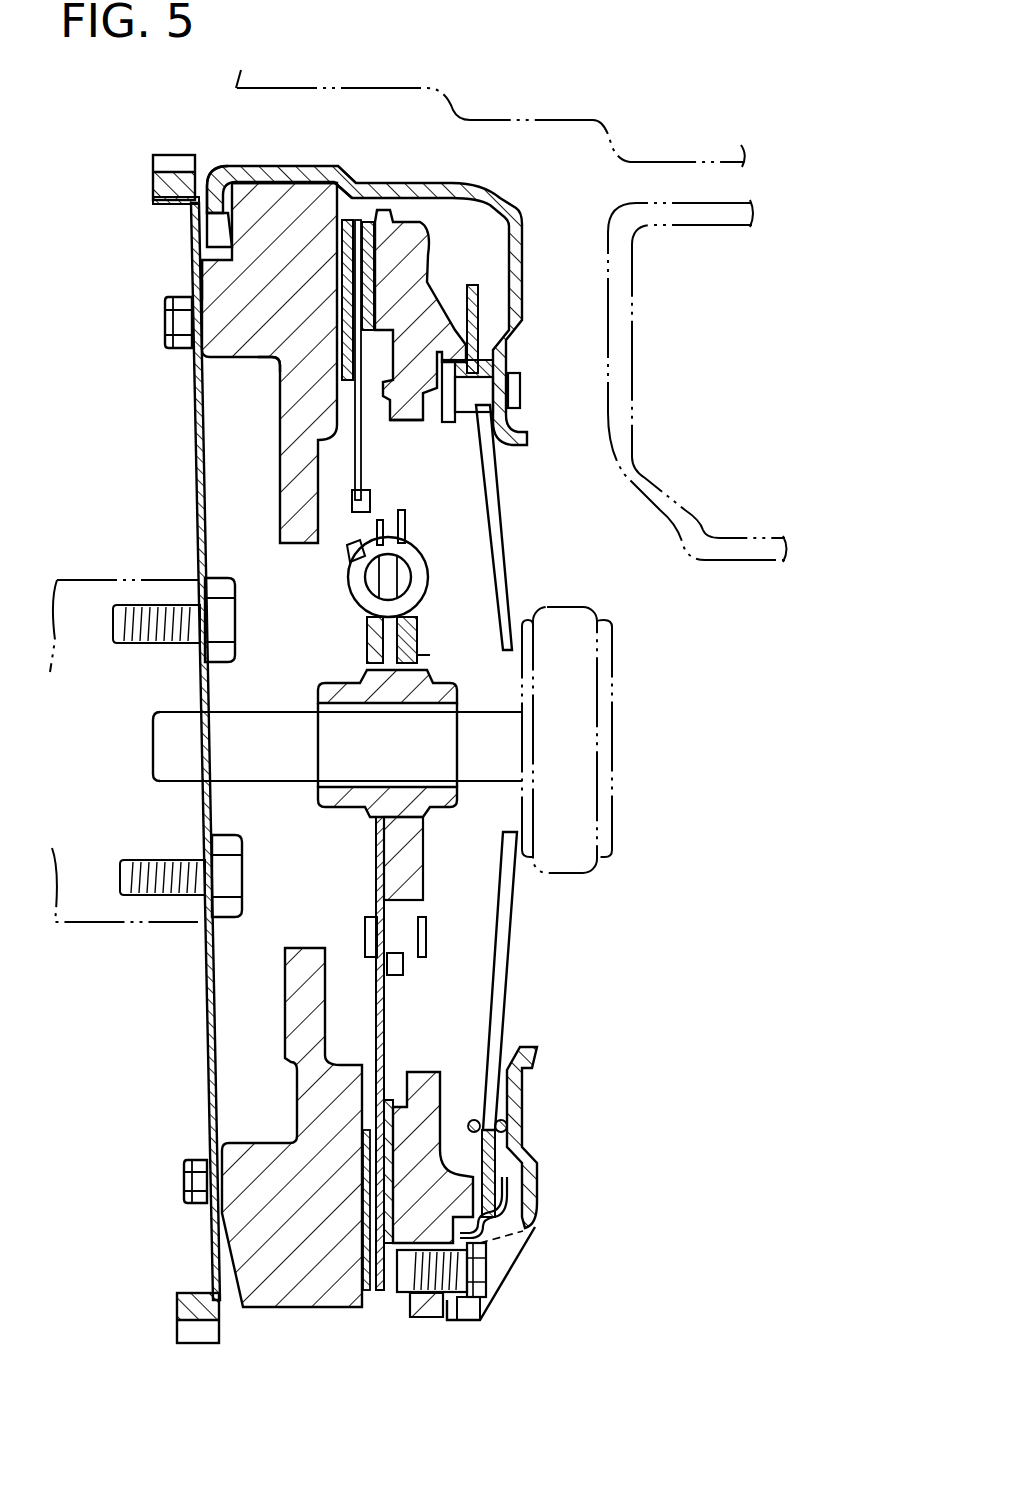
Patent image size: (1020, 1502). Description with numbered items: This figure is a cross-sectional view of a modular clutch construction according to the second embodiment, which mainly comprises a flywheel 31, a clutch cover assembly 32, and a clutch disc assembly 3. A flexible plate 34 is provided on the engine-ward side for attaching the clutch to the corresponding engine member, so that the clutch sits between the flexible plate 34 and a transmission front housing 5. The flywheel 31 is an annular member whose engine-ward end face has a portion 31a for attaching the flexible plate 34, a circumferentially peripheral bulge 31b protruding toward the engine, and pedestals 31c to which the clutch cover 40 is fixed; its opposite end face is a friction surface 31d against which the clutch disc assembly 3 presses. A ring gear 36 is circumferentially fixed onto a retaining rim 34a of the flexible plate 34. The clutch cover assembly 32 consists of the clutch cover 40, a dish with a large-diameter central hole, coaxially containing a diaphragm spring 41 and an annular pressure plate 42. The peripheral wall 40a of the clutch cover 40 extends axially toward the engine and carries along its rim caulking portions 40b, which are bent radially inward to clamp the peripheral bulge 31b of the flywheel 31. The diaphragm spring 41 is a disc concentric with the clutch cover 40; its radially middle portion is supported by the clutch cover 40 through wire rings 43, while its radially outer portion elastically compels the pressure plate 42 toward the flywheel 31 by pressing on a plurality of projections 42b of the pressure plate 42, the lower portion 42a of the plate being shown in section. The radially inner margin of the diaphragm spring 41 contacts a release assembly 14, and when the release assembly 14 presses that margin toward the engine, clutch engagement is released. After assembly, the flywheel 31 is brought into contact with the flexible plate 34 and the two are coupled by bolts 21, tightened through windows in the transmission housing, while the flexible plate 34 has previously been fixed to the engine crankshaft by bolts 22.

The clutch disc assembly 3 is at (426, 535).
The transmission front housing 5 is at (633, 333).
The release assembly 14 is at (618, 650).
The bolts 21 is at (163, 320).
The bolts 22 is at (148, 865).
The flywheel 31 is at (205, 362).
The portion for attaching the flexible plate 31a is at (205, 292).
The peripheral bulge 31b is at (243, 182).
The pedestals 31c is at (205, 262).
The friction surface 31d is at (285, 372).
The clutch cover assembly 32 is at (558, 550).
The flexible plate 34 is at (197, 420).
The retaining rim 34a is at (172, 205).
The ring gear 36 is at (156, 180).
The clutch cover 40 is at (512, 262).
The peripheral wall 40a is at (340, 168).
The caulking portions 40b is at (216, 178).
The diaphragm spring 41 is at (500, 496).
The pressure plate 42 is at (425, 255).
The pressure plate lower portion 42a is at (412, 425).
The projections 42b is at (470, 290).
The wire rings 43 is at (506, 352).